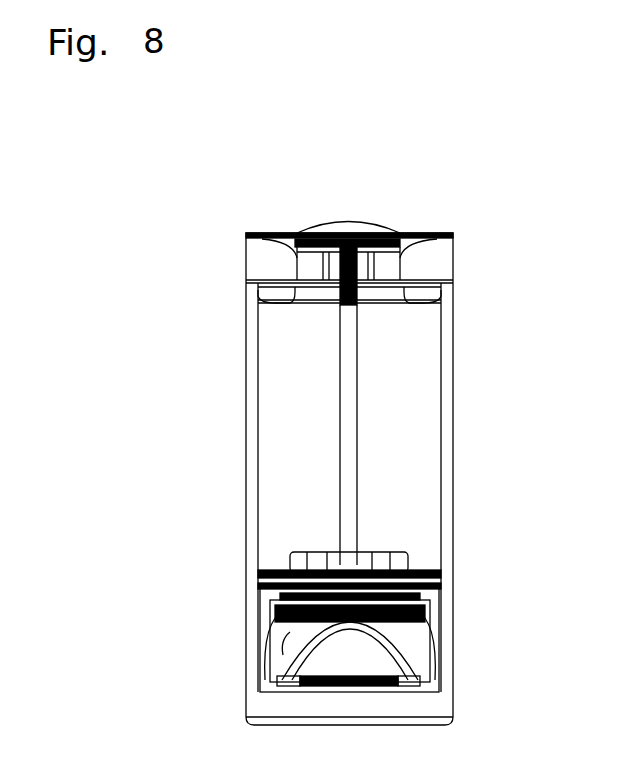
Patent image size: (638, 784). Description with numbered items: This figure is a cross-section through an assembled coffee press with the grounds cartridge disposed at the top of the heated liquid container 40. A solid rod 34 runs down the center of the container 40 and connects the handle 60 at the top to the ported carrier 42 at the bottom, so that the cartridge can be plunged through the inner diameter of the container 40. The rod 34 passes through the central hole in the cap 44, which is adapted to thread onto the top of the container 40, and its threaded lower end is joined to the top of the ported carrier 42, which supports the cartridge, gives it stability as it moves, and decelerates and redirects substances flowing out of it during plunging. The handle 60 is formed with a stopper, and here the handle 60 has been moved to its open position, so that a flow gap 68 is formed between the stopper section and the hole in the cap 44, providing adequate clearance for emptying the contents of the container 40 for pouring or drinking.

The liquid container 40 is at (457, 432).
The handle 60 is at (378, 228).
The cap 44 is at (453, 250).
The flow gap 68 is at (293, 300).
The rod 34 is at (353, 450).
The ported carrier 42 is at (295, 635).